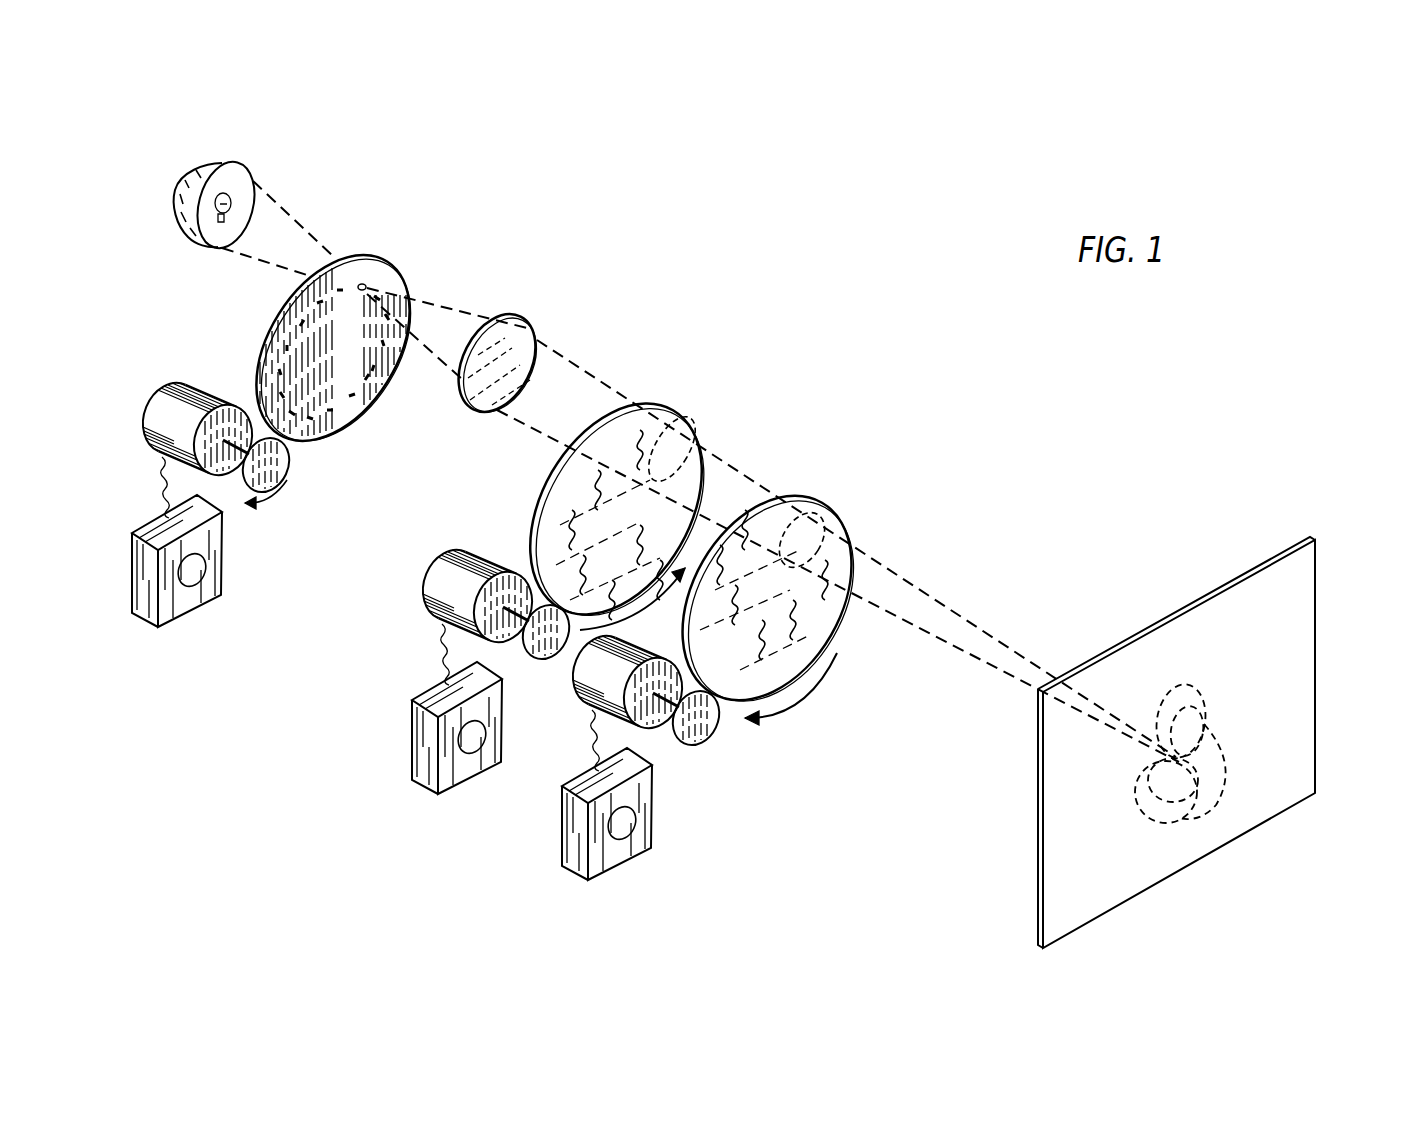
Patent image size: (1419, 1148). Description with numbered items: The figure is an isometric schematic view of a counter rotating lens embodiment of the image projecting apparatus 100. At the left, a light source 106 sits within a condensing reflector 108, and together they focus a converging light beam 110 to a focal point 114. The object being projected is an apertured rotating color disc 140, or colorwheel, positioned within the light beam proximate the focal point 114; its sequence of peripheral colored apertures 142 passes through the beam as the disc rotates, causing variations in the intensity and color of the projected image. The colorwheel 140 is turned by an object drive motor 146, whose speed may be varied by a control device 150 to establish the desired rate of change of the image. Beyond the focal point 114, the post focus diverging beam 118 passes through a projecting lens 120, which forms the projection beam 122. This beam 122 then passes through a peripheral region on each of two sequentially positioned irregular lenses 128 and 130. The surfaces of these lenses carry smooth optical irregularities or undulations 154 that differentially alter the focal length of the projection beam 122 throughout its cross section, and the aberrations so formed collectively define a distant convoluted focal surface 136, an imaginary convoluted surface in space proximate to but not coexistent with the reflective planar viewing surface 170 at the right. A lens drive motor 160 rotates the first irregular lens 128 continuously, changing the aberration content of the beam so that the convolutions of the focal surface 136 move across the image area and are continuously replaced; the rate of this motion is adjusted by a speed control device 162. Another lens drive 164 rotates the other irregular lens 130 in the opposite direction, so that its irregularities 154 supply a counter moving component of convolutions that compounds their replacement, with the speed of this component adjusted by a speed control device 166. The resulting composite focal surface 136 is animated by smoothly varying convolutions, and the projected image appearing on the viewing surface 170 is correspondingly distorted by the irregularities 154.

The image projecting apparatus 100 is at (790, 340).
The light source 106 is at (232, 200).
The condensing reflector 108 is at (216, 160).
The converging light beam 110 is at (303, 223).
The focal point 114 is at (367, 285).
The post focus diverging beam 118 is at (443, 310).
The projecting lens 120 is at (537, 332).
The projection beam 122 is at (592, 373).
The irregular lens 128 is at (684, 418).
The irregular lens 130 is at (823, 500).
The convoluted focal surface 136 is at (1212, 810).
The apertured rotating color disc 140 is at (338, 438).
The peripheral colored apertures 142 is at (302, 323).
The object drive motor 146 is at (157, 418).
The control device 150 is at (203, 607).
The optical irregularities 154 is at (835, 565).
The lens drive motor 160 is at (433, 580).
The speed control device 162 is at (477, 780).
The lens drive 164 is at (652, 727).
The speed control device 166 is at (628, 865).
The reflective planar viewing surface 170 is at (1316, 622).